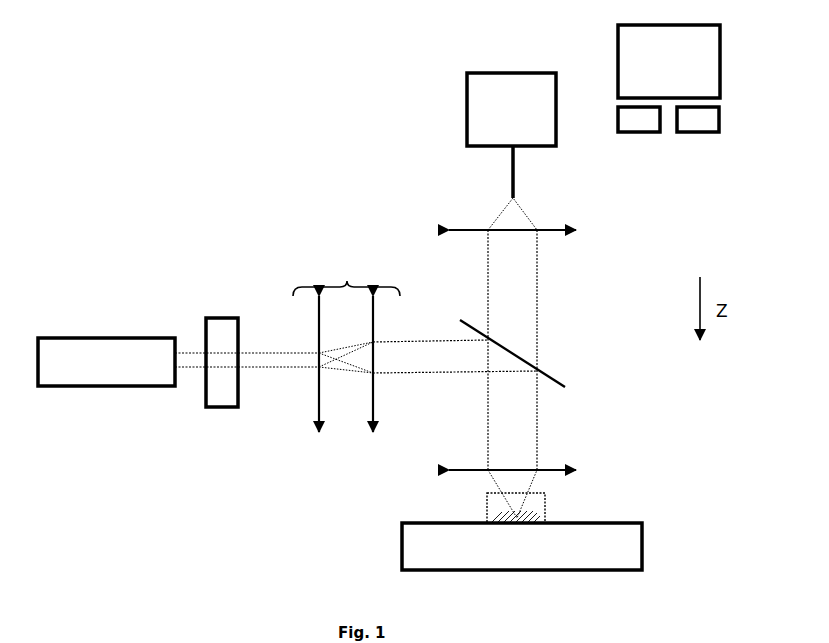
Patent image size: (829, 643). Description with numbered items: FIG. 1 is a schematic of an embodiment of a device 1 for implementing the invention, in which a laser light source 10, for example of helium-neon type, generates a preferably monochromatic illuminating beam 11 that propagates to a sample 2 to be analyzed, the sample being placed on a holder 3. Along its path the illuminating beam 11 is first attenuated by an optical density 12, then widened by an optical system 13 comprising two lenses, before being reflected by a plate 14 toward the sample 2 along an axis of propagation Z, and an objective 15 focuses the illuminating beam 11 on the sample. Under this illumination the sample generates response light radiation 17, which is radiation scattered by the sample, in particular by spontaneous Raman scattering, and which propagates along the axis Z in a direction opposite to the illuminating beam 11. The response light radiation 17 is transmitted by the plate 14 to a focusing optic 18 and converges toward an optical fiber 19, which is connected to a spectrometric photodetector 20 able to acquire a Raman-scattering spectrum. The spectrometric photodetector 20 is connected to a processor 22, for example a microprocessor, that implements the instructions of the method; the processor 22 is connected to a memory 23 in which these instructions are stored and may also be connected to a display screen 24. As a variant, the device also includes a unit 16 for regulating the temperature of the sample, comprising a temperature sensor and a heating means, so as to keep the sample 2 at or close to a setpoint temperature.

The device 1 is at (133, 182).
The sample 2 is at (540, 515).
The holder 3 is at (528, 560).
The laser light source 10 is at (122, 335).
The illuminating beam 11 is at (280, 352).
The optical density 12 is at (225, 312).
The optical system 13 is at (347, 275).
The plate 14 is at (552, 375).
The objective 15 is at (555, 468).
The unit for regulating the temperature of the sample 16 is at (485, 508).
The response light radiation 17 is at (541, 292).
The focusing optic 18 is at (545, 227).
The optical fiber 19 is at (493, 176).
The spectrometric photodetector 20 is at (480, 108).
The processor 22 is at (633, 118).
The memory 23 is at (687, 125).
The display screen 24 is at (640, 48).